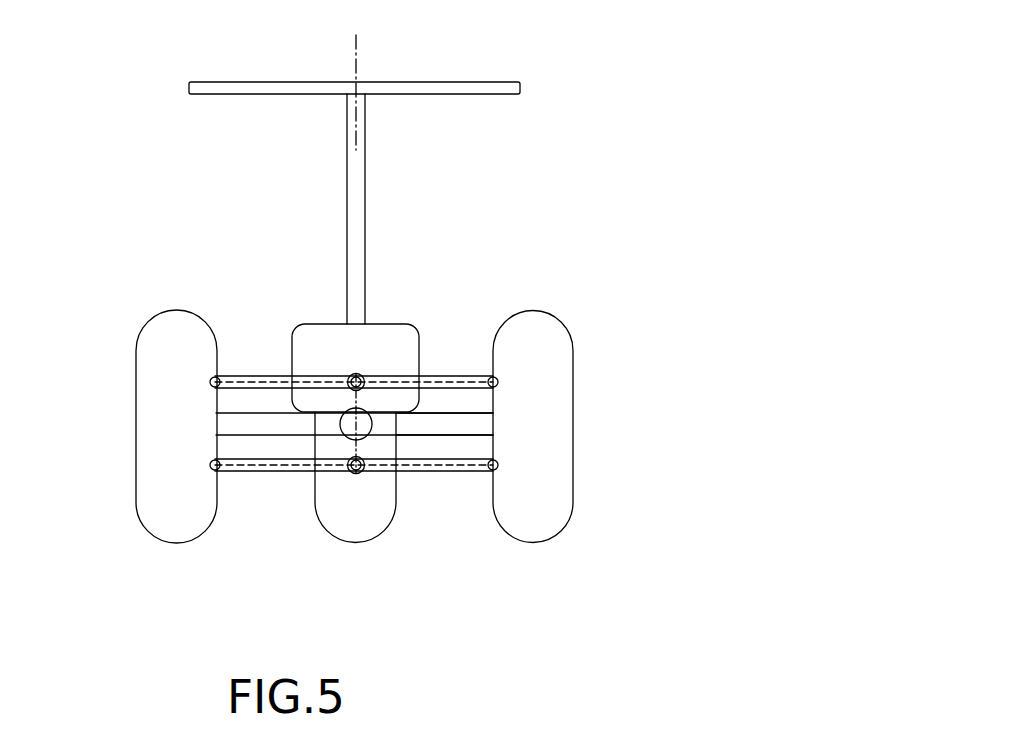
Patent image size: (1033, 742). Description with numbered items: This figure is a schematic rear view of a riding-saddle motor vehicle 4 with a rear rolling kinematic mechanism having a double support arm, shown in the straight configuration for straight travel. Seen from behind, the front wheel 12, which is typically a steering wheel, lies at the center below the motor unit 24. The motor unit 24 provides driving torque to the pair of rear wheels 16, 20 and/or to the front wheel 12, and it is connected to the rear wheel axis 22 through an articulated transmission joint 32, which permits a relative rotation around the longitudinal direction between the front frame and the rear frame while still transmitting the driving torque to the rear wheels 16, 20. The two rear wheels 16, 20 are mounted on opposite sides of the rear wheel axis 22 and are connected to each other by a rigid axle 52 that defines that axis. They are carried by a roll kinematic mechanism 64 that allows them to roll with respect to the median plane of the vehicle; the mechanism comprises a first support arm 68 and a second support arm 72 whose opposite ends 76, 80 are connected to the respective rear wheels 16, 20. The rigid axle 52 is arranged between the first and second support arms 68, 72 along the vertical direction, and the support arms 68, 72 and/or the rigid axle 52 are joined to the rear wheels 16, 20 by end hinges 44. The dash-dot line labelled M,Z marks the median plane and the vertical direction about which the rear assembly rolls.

The riding-saddle motor vehicle 4 is at (708, 142).
The front wheel 12 is at (352, 527).
The rear wheel 16 is at (173, 508).
The rear wheel 20 is at (555, 517).
The rear wheel axis 22 is at (501, 425).
The motor unit 24 is at (403, 345).
The articulated transmission joint 32 is at (345, 430).
The end hinges 44 is at (213, 465).
The rigid axle 52 is at (432, 427).
The roll kinematic mechanism 64 is at (255, 342).
The first support arm 68 is at (268, 378).
The second support arm 72 is at (238, 472).
The end 76 is at (213, 375).
The end 80 is at (497, 377).
The median plane and vertical direction M,Z is at (352, 45).